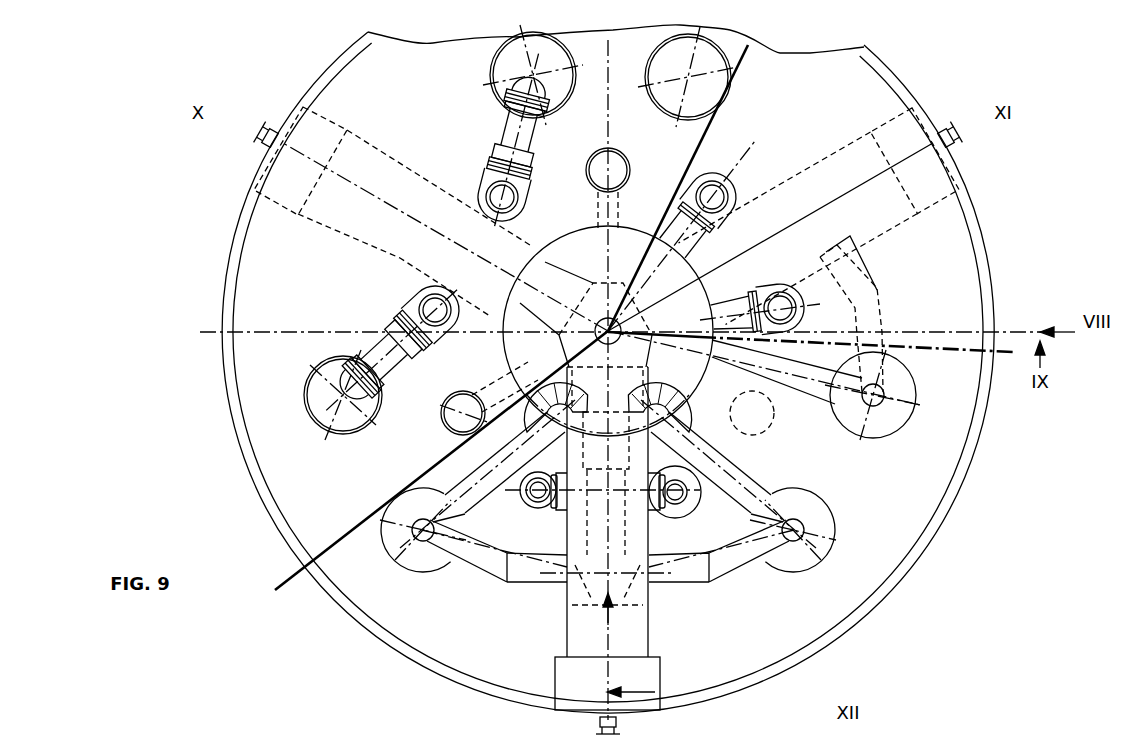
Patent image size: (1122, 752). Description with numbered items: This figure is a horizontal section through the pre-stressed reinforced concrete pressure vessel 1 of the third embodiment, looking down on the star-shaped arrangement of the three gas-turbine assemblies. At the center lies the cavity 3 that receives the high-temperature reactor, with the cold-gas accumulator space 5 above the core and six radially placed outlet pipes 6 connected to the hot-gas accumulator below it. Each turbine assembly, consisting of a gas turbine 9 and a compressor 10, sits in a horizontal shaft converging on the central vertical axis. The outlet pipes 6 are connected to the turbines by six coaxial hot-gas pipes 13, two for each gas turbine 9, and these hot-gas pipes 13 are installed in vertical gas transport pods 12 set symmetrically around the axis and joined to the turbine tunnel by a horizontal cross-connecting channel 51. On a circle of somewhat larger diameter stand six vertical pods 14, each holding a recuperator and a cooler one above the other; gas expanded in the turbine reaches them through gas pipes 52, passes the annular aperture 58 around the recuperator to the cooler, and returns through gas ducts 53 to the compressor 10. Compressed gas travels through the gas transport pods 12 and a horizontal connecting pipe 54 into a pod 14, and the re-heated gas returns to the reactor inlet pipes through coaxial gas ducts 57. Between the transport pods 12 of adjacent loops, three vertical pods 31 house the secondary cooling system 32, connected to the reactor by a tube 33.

The pressure vessel 1 is at (620, 97).
The cavity 3 is at (625, 232).
The cold-gas accumulator space 5 is at (582, 625).
The outlet pipes 6 is at (700, 245).
The gas turbine 9 is at (598, 497).
The compressor 10 is at (598, 400).
The vertical gas transport pods 12 is at (483, 200).
The coaxial hot-gas pipes 13 is at (730, 210).
The vertical pods 14 is at (551, 57).
The vertical pods 31 is at (625, 183).
The secondary cooling system 32 is at (622, 163).
The tube 33 is at (603, 212).
The horizontal cross-connecting channel 51 is at (562, 508).
The gas pipes 52 is at (505, 573).
The gas ducts 53 is at (463, 480).
The horizontal connecting pipe 54 is at (497, 143).
The gas ducts 57 is at (520, 153).
The annular aperture 58 is at (565, 98).